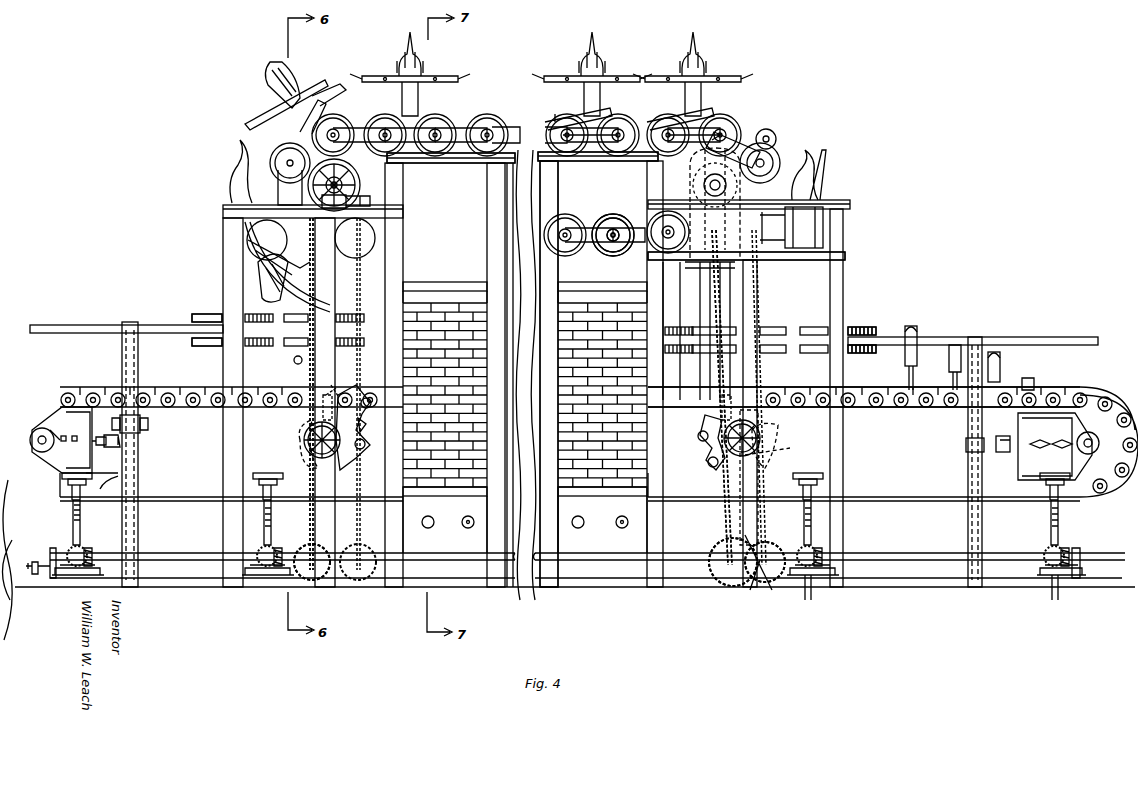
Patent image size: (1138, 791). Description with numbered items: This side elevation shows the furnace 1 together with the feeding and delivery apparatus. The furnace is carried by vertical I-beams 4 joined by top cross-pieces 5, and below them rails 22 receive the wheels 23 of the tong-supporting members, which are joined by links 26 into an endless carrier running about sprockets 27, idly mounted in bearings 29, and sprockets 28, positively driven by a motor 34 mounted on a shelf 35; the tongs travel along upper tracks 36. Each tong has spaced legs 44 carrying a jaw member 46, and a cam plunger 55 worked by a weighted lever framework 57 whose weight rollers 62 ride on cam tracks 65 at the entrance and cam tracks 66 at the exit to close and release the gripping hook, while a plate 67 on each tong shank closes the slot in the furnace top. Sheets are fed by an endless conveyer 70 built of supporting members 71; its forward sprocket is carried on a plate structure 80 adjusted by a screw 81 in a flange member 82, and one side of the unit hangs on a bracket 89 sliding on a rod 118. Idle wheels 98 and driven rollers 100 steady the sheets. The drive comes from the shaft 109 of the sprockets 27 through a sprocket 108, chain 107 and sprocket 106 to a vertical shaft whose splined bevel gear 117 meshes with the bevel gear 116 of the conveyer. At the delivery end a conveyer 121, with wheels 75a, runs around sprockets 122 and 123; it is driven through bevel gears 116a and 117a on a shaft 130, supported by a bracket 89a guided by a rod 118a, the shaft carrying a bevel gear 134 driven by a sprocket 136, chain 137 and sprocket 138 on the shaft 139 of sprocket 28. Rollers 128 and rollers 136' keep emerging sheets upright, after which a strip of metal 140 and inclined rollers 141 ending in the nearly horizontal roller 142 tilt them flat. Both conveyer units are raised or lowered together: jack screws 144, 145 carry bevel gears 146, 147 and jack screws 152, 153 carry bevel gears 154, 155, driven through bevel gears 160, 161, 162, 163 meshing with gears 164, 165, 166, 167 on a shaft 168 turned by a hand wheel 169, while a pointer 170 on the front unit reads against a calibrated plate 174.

The furnace 1 is at (565, 296).
The I-beams 4 is at (553, 179).
The top cross-pieces 5 is at (478, 178).
The rails 22 is at (590, 258).
The wheels 23 is at (494, 122).
The links 26 is at (460, 133).
The driving wheels or sprockets 27 is at (337, 123).
The sprocket members 28 is at (720, 176).
The bearings 29 is at (292, 158).
The motor 34 is at (800, 214).
The shelf 35 is at (805, 260).
The upper tracks 36 is at (625, 165).
The leg members 44 is at (418, 92).
The jaw member 46 is at (265, 70).
The cam-like plunger 55 is at (588, 89).
The weighted lever framework 57 is at (680, 113).
The weight rollers 62 is at (358, 120).
The cam tracks 65 is at (236, 168).
The cam tracks 66 is at (815, 170).
The plate 67 is at (250, 118).
The endless conveyer 70 is at (183, 390).
The supporting members 71 is at (154, 390).
The wheels 75a is at (878, 390).
The plate structure 80 is at (60, 408).
The screw 81 is at (98, 447).
The flange member 82 is at (108, 433).
The bracket 89 is at (300, 455).
The bracket 89a is at (762, 470).
The idly rotatable wheels 98 is at (210, 316).
The positively-driven rollers 100 is at (292, 272).
The sprocket 106 is at (335, 565).
The sprocket chain 107 is at (300, 374).
The sprocket 108 is at (352, 163).
The shaft 109 is at (348, 193).
The beveled gear 116 is at (302, 438).
The bevel gear 116a is at (760, 435).
The beveled gear 117 is at (320, 405).
The bevel gear 117a is at (735, 404).
The rod 118 is at (352, 395).
The rod 118a is at (706, 465).
The conveyor 121 is at (1063, 388).
The sprocket 122 is at (785, 453).
The sprockets 123 is at (1098, 405).
The rollers 128 is at (770, 326).
The shaft 130 is at (745, 518).
The beveled gear 134 is at (725, 540).
The sprocket 136 is at (767, 569).
The rollers 136' is at (874, 324).
The sprocket chain 137 is at (728, 489).
The sprocket 138 is at (768, 128).
The shaft 139 is at (764, 152).
The strip of metal 140 is at (995, 336).
The rollers 141 is at (918, 330).
The final roller 142 is at (1028, 378).
The vertical jack screw 144 is at (72, 519).
The vertical jack screw 145 is at (262, 519).
The beveled gear 146 is at (92, 568).
The beveled gear 147 is at (250, 568).
The vertical jack screw 152 is at (813, 524).
The vertical jack screw 153 is at (1050, 521).
The beveled gear 154 is at (838, 570).
The beveled gear 155 is at (1040, 571).
The beveled gear 160 is at (82, 550).
The beveled gear 161 is at (258, 552).
The beveled gear 162 is at (803, 548).
The beveled gear 163 is at (1048, 552).
The gear 164 is at (92, 548).
The gear 165 is at (280, 548).
The gear 166 is at (823, 552).
The gear 167 is at (1068, 550).
The shaft 168 is at (212, 560).
The hand wheel 169 is at (48, 560).
The pointer 170 is at (140, 426).
The calibrated plate 174 is at (120, 510).